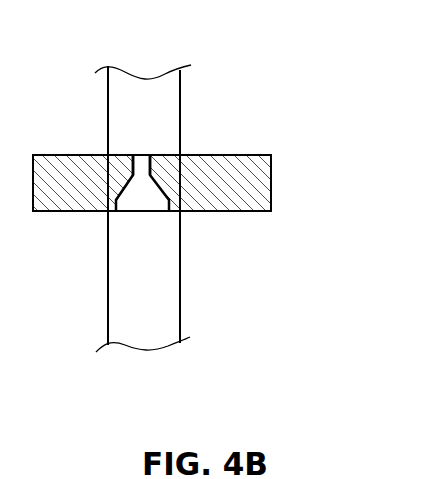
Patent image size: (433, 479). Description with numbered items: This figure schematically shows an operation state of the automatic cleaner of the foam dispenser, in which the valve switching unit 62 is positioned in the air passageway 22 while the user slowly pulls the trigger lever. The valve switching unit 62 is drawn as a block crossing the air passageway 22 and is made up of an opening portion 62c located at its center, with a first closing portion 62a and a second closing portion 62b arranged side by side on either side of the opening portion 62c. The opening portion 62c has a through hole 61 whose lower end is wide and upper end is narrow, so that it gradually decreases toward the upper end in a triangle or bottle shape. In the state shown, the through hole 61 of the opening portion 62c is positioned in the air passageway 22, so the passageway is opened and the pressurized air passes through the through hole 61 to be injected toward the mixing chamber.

The air passageway 22 is at (157, 293).
The through hole 61 is at (137, 153).
The valve switching unit 62 is at (193, 162).
The first closing portion 62a is at (52, 212).
The second closing portion 62b is at (218, 153).
The opening portion 62c is at (157, 153).